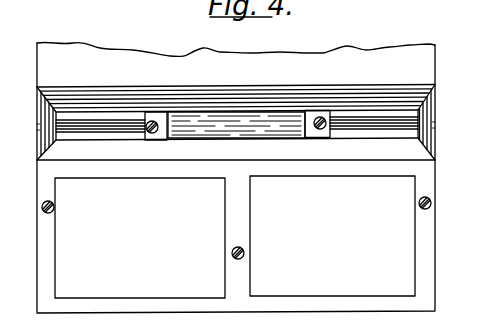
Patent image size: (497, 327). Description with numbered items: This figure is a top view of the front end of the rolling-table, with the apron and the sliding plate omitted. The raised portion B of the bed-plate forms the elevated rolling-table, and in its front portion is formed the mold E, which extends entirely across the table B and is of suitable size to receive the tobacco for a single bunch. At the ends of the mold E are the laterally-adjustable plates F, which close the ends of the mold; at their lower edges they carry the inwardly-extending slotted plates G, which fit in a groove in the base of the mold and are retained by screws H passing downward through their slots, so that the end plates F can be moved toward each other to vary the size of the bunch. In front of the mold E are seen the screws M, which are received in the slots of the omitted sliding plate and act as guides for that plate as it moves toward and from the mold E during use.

The raised portion B is at (236, 177).
The mold E is at (160, 82).
The laterally-adjustable plates F is at (37, 127).
The slotted plates G is at (124, 141).
The screws H is at (152, 141).
The screws M is at (438, 203).